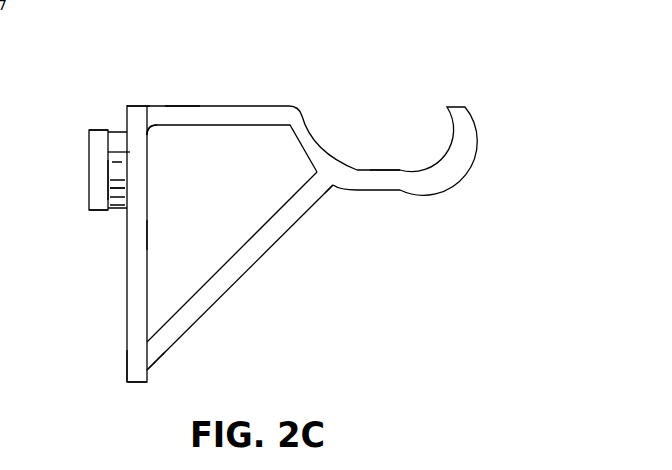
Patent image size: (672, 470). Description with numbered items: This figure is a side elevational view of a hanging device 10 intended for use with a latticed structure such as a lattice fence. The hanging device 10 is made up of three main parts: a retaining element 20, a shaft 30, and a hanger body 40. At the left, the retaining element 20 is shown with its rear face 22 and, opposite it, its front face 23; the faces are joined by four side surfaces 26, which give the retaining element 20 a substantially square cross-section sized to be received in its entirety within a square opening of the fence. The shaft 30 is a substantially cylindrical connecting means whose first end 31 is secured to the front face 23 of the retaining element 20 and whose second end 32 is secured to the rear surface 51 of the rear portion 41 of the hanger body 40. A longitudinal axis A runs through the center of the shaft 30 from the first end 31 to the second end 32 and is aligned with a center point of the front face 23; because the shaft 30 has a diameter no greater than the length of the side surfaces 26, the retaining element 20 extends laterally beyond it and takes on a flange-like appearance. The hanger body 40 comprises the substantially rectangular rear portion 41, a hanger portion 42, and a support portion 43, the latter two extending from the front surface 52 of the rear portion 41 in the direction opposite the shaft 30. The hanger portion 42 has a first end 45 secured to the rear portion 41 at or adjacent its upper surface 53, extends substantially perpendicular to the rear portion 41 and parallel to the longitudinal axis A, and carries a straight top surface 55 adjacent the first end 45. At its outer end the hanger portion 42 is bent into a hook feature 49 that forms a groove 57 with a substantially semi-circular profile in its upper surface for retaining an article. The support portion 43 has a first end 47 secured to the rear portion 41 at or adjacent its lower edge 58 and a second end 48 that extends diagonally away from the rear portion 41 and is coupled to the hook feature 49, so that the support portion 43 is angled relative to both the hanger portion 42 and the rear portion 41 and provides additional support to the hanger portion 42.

The hanging device 10 is at (365, 64).
The retaining element 20 is at (85, 118).
The rear face 22 is at (88, 140).
The front face 23 is at (130, 152).
The side surfaces 26 is at (98, 129).
The shaft 30 is at (114, 119).
The first end 31 is at (108, 180).
The second end 32 is at (127, 187).
The hanger body 40 is at (227, 96).
The rear portion 41 is at (127, 307).
The hanger portion 42 is at (280, 105).
The support portion 43 is at (247, 260).
The first end 45 is at (146, 113).
The first end 47 is at (157, 347).
The second end 48 is at (333, 187).
The hook feature 49 is at (385, 118).
The rear surface 51 is at (127, 358).
The front surface 52 is at (147, 235).
The upper surface 53 is at (138, 105).
The straight top surface 55 is at (182, 105).
The groove 57 is at (383, 172).
The lower edge 58 is at (133, 383).
The longitudinal axis A is at (213, 170).